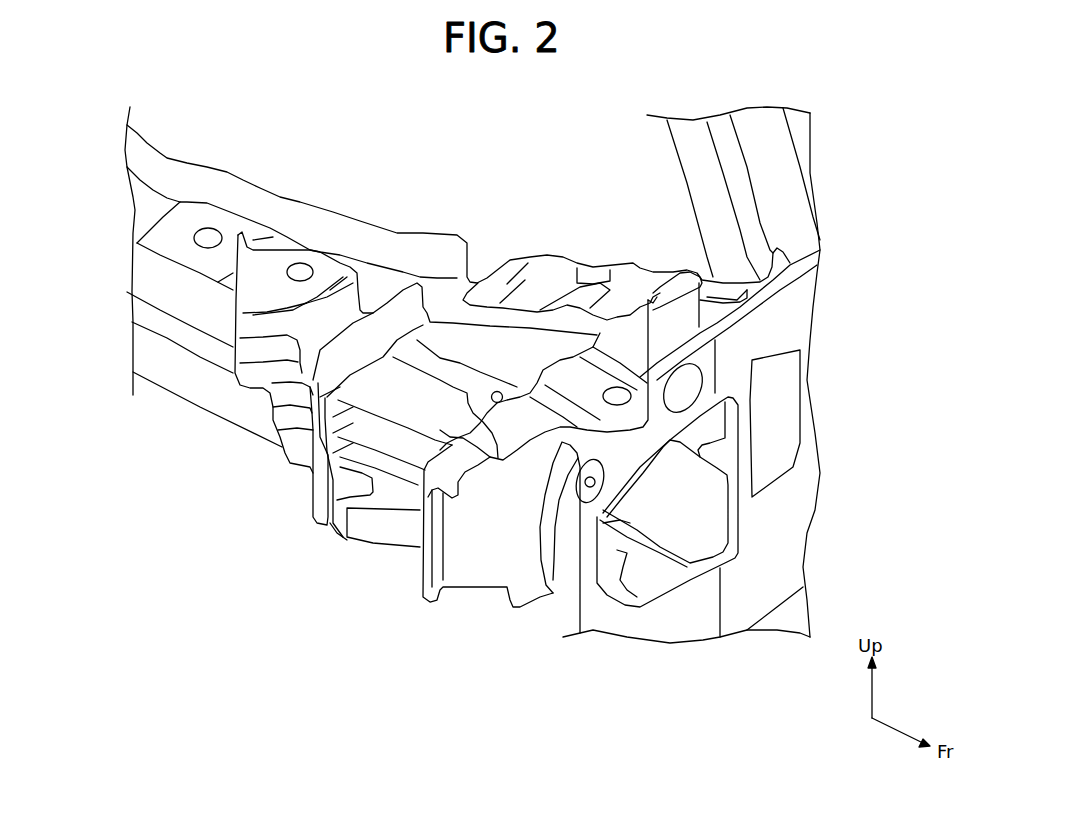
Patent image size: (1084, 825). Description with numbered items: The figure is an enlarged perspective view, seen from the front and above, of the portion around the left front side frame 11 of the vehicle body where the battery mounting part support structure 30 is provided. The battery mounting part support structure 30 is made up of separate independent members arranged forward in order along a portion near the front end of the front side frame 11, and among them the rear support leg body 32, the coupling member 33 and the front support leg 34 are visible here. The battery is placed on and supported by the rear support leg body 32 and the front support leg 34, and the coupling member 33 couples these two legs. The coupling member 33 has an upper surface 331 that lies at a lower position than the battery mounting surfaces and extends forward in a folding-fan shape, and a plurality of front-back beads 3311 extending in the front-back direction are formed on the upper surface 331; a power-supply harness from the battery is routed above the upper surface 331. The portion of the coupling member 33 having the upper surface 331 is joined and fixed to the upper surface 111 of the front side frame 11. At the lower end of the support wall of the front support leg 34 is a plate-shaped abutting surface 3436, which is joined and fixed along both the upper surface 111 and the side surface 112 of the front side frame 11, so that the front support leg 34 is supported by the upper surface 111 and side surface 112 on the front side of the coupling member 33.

The front side frame 11 is at (137, 275).
The upper surface of front side frame 111 is at (150, 203).
The side surface of front side frame 112 is at (177, 368).
The battery mounting part support structure 30 is at (255, 611).
The rear support leg body 32 is at (283, 474).
The coupling member 33 is at (378, 550).
The upper surface of coupling member 331 is at (530, 343).
The front-back beads 3311 is at (377, 430).
The front support leg 34 is at (433, 612).
The abutting surface 3436 is at (547, 555).